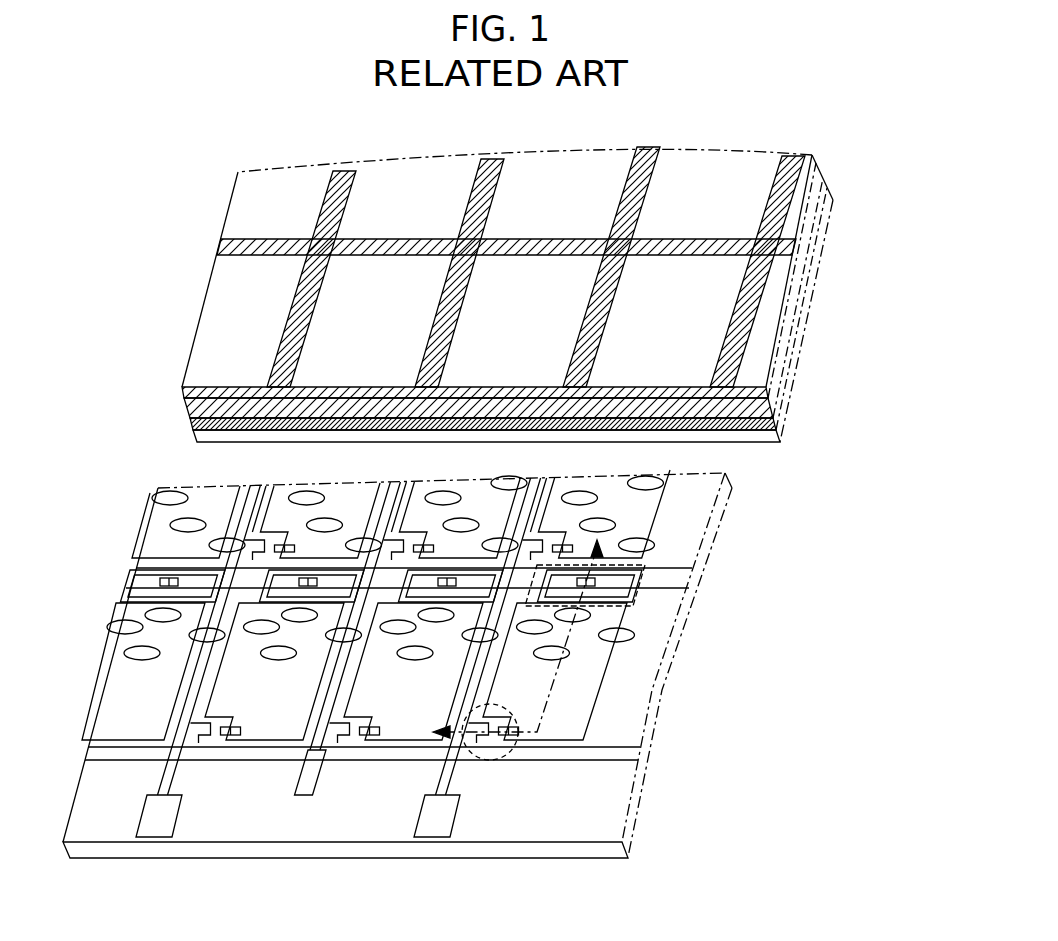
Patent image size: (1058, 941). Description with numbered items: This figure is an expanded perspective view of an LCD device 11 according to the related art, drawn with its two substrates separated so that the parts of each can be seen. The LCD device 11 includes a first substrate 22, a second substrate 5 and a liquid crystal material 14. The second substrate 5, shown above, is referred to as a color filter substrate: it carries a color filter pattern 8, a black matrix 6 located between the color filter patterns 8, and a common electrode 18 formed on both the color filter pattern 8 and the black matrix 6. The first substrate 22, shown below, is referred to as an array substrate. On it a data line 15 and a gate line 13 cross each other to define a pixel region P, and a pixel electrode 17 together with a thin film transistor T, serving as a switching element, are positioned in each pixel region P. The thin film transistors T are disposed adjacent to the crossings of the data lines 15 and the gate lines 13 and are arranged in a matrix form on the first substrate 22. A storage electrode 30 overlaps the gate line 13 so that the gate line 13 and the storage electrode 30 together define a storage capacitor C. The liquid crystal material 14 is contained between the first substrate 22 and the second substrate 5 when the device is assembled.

The second substrate 5 is at (188, 401).
The black matrix 6 is at (812, 248).
The color filter pattern 8 is at (748, 206).
The common electrode 18 is at (764, 432).
The LCD device 11 is at (499, 700).
The gate line 13 is at (601, 757).
The liquid crystal material 14 is at (650, 533).
The data line 15 is at (436, 792).
The pixel electrode 17 is at (598, 714).
The first substrate 22 is at (588, 850).
The storage electrode 30 is at (638, 580).
The storage capacitor C is at (631, 604).
The pixel region P is at (641, 674).
The thin film transistor T is at (511, 754).